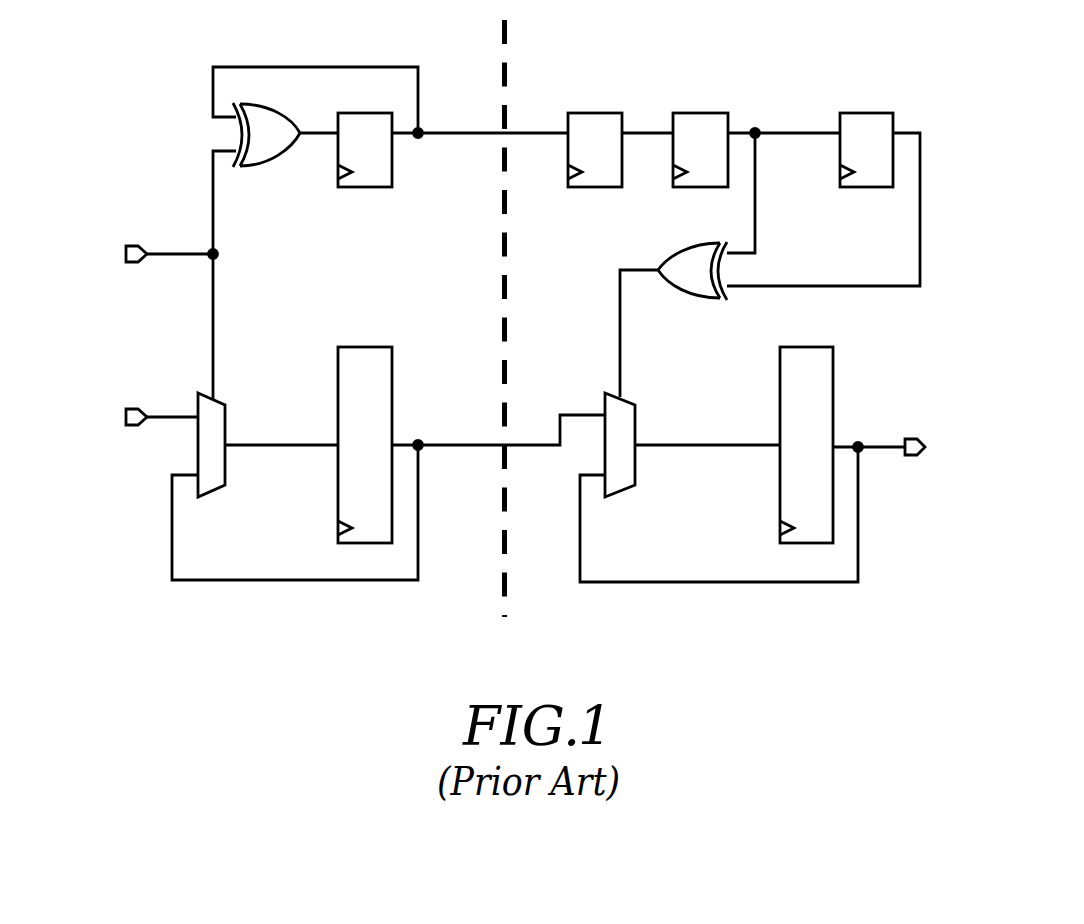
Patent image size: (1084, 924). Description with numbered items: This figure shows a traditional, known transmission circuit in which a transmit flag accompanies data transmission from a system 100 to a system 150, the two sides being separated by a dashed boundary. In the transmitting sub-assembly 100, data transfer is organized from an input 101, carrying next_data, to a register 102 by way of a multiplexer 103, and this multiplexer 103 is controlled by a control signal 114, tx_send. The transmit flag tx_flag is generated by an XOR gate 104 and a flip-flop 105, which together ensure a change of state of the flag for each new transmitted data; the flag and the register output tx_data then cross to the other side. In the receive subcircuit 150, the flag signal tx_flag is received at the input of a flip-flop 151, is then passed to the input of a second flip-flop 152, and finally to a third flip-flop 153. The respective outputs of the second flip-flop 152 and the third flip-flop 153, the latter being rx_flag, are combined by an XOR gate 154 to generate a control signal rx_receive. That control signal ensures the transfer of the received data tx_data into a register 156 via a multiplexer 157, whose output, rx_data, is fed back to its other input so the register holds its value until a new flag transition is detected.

The system 100 is at (185, 55).
The input 101 is at (140, 425).
The register 102 is at (335, 348).
The multiplexer 103 is at (207, 495).
The XOR gate 104 is at (238, 168).
The flip-flop 105 is at (353, 187).
The control signal 114 is at (126, 262).
The system 150 is at (947, 55).
The flip-flop 151 is at (597, 110).
The second flip-flop 152 is at (710, 110).
The third flip-flop 153 is at (863, 110).
The XOR gate 154 is at (690, 241).
The register 156 is at (780, 395).
The multiplexer 157 is at (608, 395).